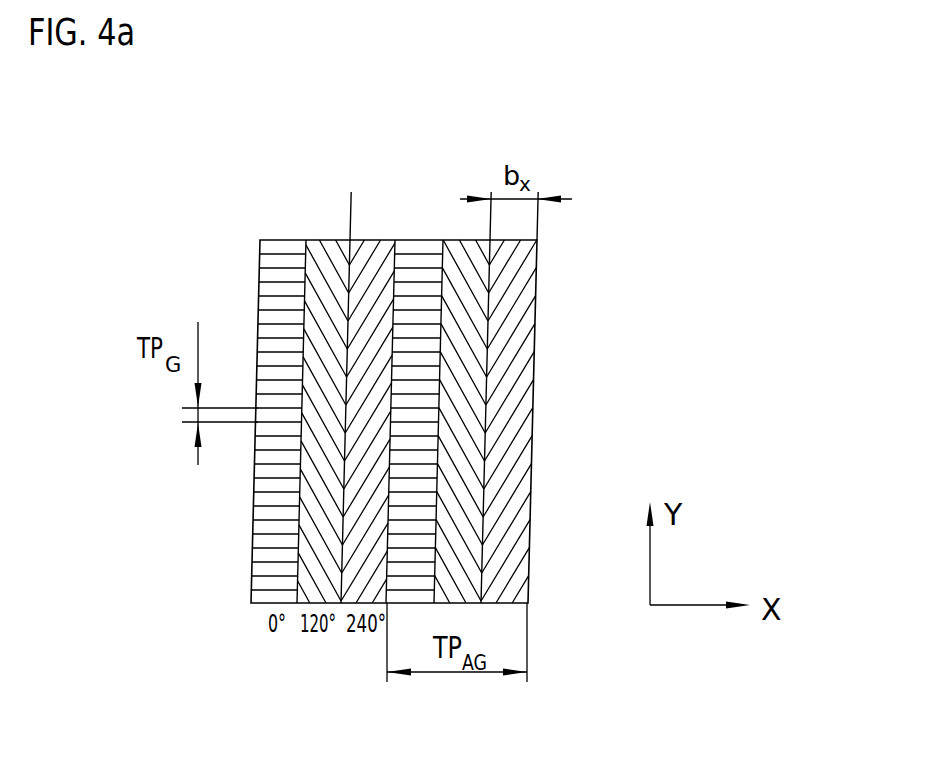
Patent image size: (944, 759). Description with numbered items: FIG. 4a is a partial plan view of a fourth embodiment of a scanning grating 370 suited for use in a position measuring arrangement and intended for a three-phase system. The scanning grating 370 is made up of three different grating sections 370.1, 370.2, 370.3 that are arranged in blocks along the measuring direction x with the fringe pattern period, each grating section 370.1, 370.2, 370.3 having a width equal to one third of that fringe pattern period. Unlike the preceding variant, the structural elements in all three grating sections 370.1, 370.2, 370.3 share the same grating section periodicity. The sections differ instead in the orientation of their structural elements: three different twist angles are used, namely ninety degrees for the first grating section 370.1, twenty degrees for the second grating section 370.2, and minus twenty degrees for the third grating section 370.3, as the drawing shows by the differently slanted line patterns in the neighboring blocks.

The scanning grating 370 is at (580, 351).
The grating section 370.1 is at (325, 361).
The grating section 370.2 is at (386, 368).
The grating section 370.3 is at (440, 368).